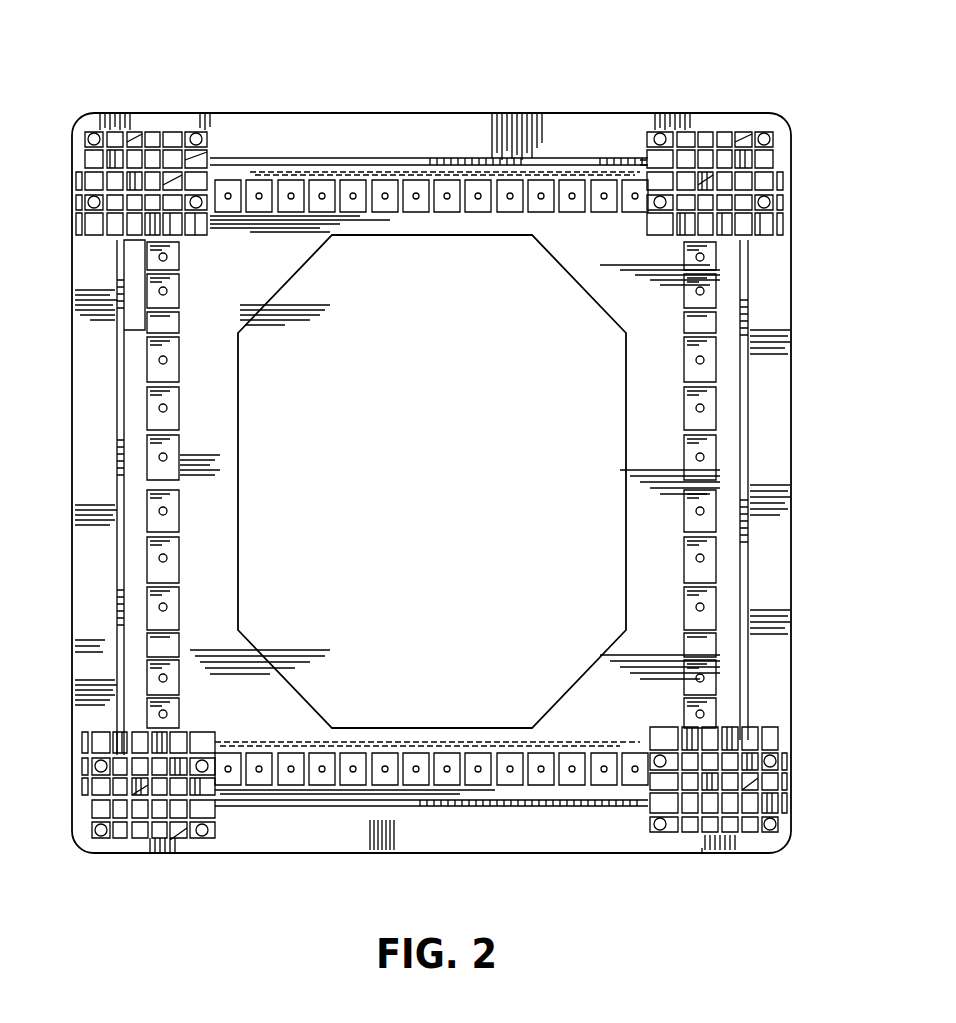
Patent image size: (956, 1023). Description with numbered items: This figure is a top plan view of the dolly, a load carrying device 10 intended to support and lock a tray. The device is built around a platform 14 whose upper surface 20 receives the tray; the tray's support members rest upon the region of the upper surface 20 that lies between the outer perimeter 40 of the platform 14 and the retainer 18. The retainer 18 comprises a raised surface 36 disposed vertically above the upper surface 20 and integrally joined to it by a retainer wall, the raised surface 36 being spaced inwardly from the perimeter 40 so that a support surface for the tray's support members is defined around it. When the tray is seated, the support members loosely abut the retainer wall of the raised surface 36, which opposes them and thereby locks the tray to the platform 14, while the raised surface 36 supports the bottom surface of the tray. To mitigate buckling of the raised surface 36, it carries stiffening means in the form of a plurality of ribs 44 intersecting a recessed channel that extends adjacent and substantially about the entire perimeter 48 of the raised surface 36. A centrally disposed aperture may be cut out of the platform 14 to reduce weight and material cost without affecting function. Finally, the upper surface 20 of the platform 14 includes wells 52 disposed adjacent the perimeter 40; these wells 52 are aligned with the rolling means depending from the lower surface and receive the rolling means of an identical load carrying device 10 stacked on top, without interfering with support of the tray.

The load carrying device 10 is at (478, 96).
The platform 14 is at (95, 272).
The retainer 18 is at (108, 429).
The upper surface 20 is at (315, 144).
The raised surface 36 is at (185, 485).
The perimeter 40 is at (76, 649).
The ribs 44 is at (176, 438).
The perimeter of the raised surface 48 is at (748, 493).
The wells 52 is at (150, 190).